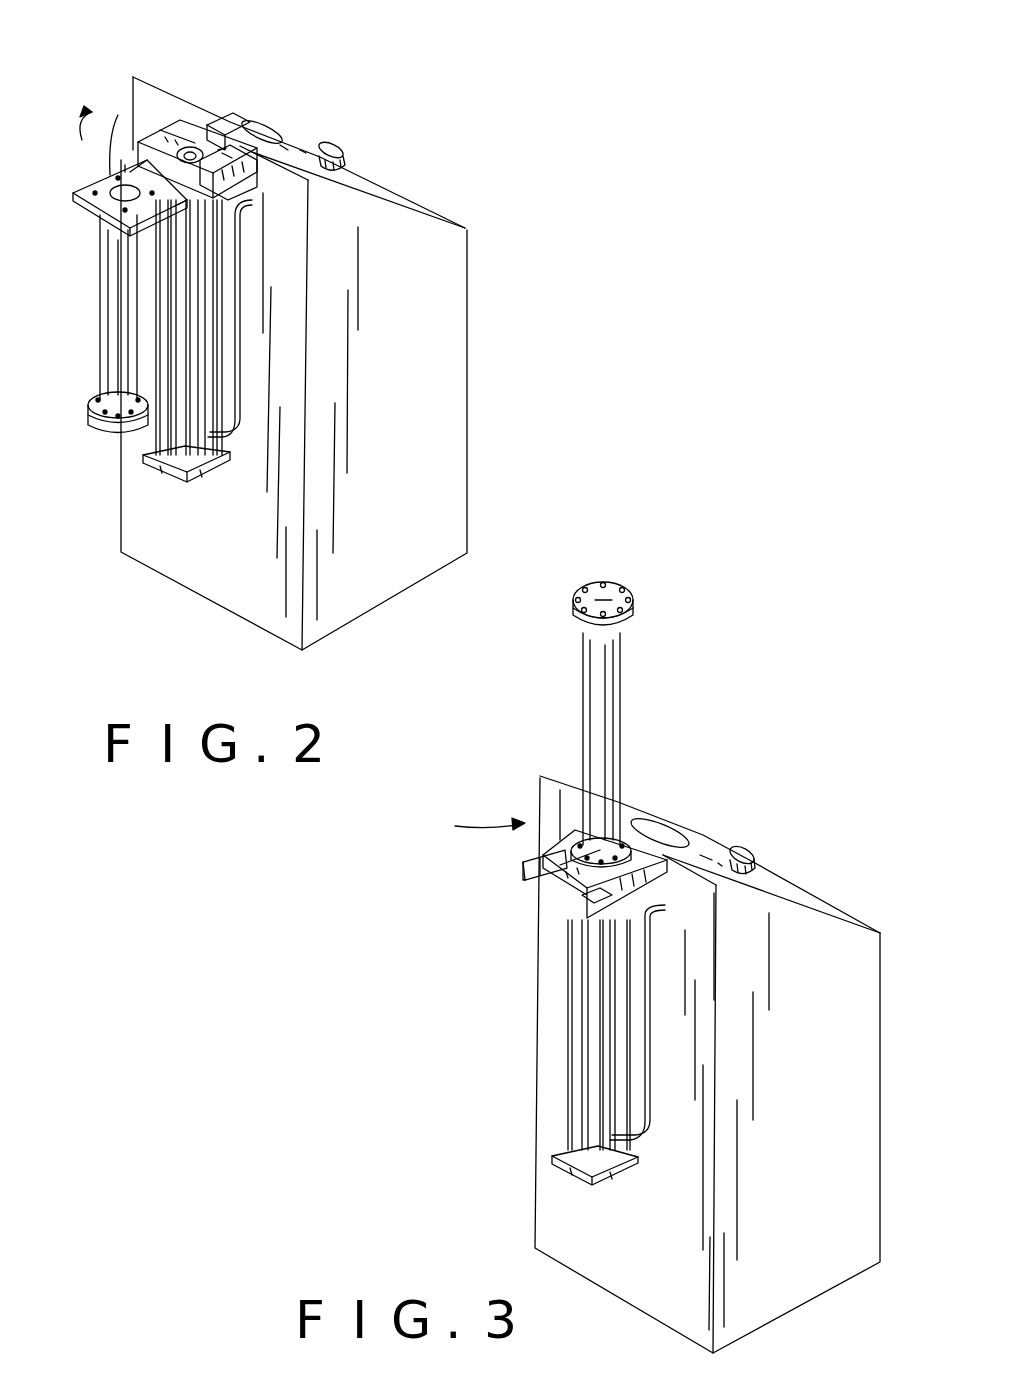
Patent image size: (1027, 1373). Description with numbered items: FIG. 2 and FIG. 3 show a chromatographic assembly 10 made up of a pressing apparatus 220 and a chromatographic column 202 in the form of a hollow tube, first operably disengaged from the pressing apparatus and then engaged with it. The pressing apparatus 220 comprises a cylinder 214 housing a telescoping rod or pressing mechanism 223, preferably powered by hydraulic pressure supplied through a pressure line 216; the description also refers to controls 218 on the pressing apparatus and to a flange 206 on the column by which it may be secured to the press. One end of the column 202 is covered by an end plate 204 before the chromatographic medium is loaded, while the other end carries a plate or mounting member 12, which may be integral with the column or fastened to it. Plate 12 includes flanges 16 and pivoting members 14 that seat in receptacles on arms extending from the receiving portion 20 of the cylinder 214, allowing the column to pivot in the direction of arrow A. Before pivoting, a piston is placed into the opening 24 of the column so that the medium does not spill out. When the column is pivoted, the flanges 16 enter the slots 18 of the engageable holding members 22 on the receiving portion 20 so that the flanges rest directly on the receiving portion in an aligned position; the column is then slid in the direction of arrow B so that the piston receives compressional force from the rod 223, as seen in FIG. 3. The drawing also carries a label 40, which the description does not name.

In FIG. 2, the chromatographic assembly 10 is at (377, 112).
In FIG. 3, the chromatographic assembly 10 is at (752, 770).
In FIG. 2, the plate or mounting member 12 is at (100, 215).
In FIG. 3, the plate or mounting member 12 is at (590, 910).
In FIG. 2, the pivoting member 14 is at (118, 170).
In FIG. 2, the flanges 16 is at (85, 193).
In FIG. 2, the slots 18 is at (185, 125).
In FIG. 3, the slots 18 is at (655, 850).
In FIG. 2, the receiving portion 20 is at (195, 148).
In FIG. 2, the engageable holding members 22 is at (150, 135).
In FIG. 2, the opening 24 is at (125, 190).
In FIG. 2, the support assembly 40 is at (88, 102).
In FIG. 3, the support assembly 40 is at (520, 797).
In FIG. 2, the chromatographic column 202 is at (118, 360).
In FIG. 3, the chromatographic column 202 is at (605, 705).
In FIG. 2, the end plate 204 is at (125, 440).
In FIG. 3, the end plate 204 is at (607, 595).
In FIG. 3, the flange 206 is at (583, 885).
In FIG. 2, the cylinder 214 is at (165, 478).
In FIG. 3, the cylinder 214 is at (590, 1030).
In FIG. 2, the pressure line 216 is at (222, 253).
In FIG. 2, the controls 218 is at (337, 148).
In FIG. 3, the controls 218 is at (755, 862).
In FIG. 2, the pressing apparatus 220 is at (467, 395).
In FIG. 3, the pressing apparatus 220 is at (707, 1065).
In FIG. 2, the telescoping rod or pressing mechanism 223 is at (225, 150).